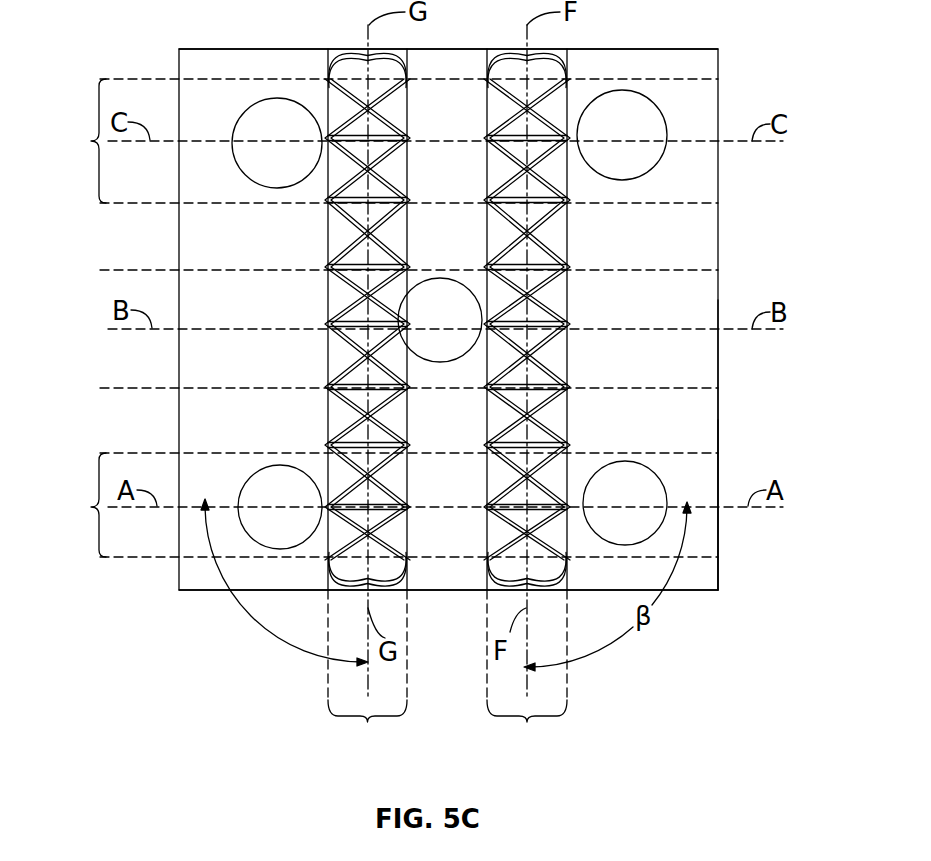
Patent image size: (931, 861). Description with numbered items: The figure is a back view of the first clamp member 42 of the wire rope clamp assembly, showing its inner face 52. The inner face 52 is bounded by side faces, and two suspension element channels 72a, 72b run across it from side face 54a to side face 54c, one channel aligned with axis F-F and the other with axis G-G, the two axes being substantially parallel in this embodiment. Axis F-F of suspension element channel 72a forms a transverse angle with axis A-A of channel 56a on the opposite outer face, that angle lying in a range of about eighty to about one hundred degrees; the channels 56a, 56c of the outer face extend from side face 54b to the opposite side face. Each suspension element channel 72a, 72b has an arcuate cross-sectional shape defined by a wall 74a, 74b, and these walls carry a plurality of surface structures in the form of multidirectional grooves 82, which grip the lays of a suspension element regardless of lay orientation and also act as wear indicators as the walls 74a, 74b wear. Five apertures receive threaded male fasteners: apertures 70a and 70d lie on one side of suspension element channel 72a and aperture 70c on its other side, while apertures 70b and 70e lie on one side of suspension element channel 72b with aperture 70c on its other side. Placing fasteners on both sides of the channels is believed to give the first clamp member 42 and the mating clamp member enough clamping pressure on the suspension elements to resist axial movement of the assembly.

The first clamp member 42 is at (175, 29).
The inner face 52 is at (705, 353).
The side face 54a is at (700, 592).
The side face 54b is at (720, 510).
The side face 54c is at (646, 49).
The channel 56a is at (74, 505).
The channel 56c is at (74, 141).
The aperture 70a is at (655, 487).
The aperture 70b is at (250, 490).
The aperture 70c is at (455, 300).
The aperture 70d is at (658, 116).
The aperture 70e is at (262, 114).
The suspension element channel 72a is at (527, 728).
The suspension element channel 72b is at (367, 728).
The wall 74a is at (481, 534).
The wall 74b is at (337, 537).
The multidirectional grooves 82 is at (531, 318).